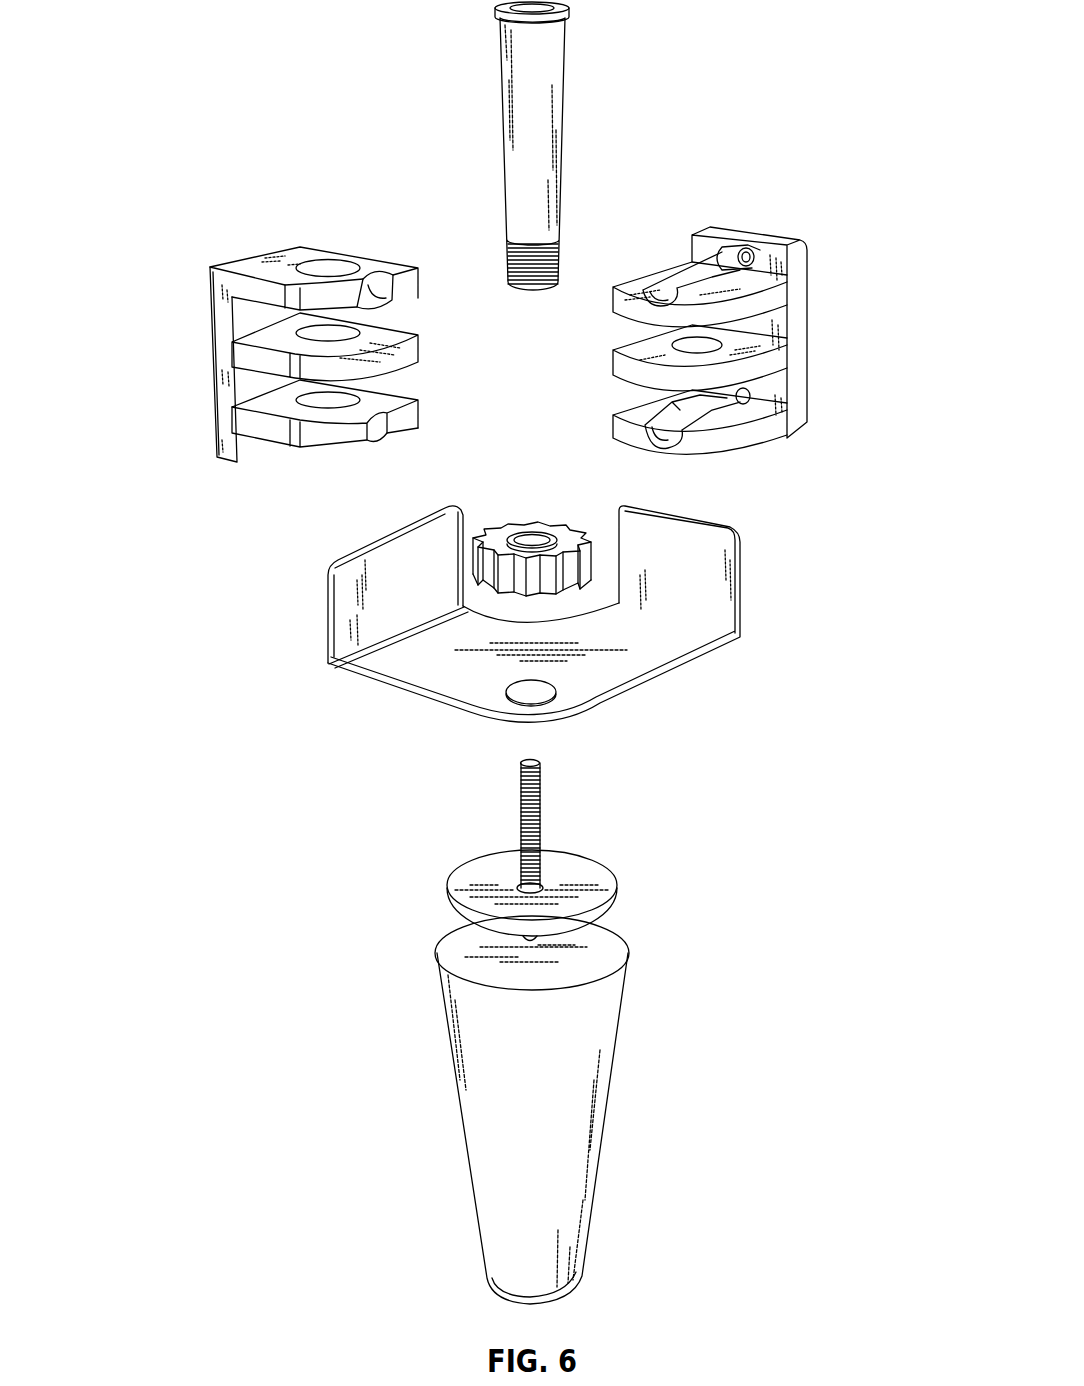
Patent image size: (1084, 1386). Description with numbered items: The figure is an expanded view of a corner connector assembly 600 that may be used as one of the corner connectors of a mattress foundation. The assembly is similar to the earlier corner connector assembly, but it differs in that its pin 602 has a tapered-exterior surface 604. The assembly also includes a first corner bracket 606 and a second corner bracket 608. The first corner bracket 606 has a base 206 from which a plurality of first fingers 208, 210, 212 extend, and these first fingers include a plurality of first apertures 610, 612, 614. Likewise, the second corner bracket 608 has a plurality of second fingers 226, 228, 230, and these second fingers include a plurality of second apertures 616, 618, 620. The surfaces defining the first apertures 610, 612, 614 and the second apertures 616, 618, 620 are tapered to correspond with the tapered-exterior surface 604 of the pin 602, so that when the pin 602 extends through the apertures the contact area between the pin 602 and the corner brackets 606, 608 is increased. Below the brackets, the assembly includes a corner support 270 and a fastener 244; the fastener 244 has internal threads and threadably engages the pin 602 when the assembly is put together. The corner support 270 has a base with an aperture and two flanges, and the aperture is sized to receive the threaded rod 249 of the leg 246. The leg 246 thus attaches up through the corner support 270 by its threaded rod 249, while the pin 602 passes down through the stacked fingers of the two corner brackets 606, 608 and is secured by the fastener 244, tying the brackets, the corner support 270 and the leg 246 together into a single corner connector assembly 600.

The corner connector assembly 600 is at (203, 36).
The pin 602 is at (517, 90).
The tapered-exterior surface 604 is at (538, 167).
The base 206 is at (220, 323).
The first corner bracket 606 is at (252, 267).
The first finger 212 is at (372, 280).
The first aperture 614 is at (310, 262).
The first finger 210 is at (403, 327).
The first aperture 612 is at (292, 333).
The first finger 208 is at (415, 412).
The first aperture 610 is at (330, 408).
The second corner bracket 608 is at (760, 233).
The second finger 230 is at (783, 303).
The second aperture 620 is at (682, 277).
The second finger 228 is at (780, 360).
The second aperture 618 is at (675, 325).
The second finger 226 is at (773, 417).
The second aperture 616 is at (663, 393).
The corner support 270 is at (680, 643).
The fastener 244 is at (490, 548).
The threaded rod 249 is at (533, 783).
The leg 246 is at (588, 1072).